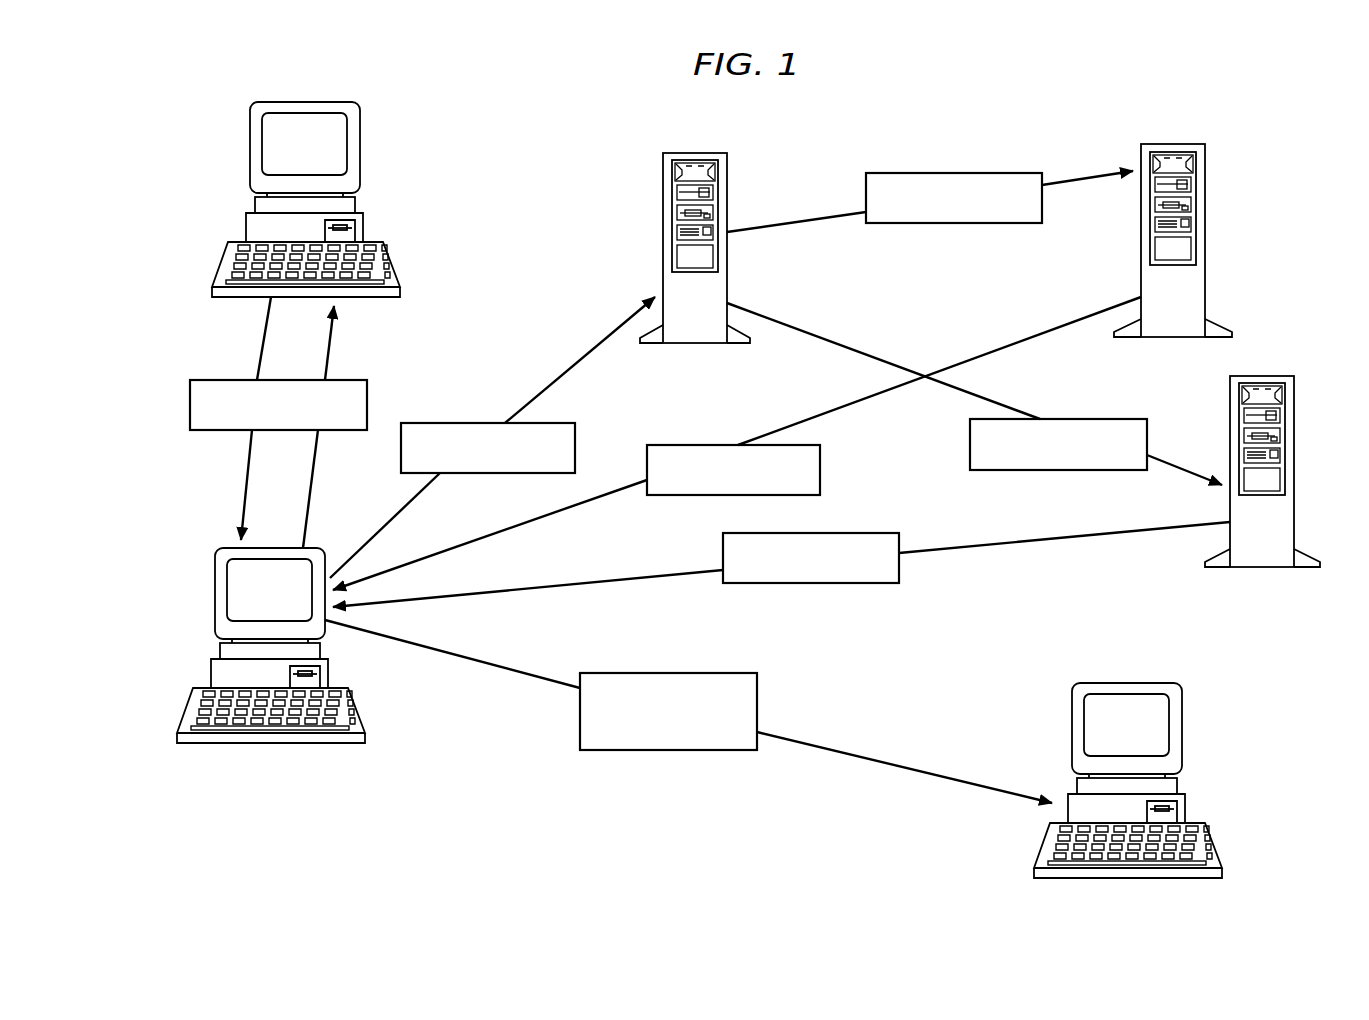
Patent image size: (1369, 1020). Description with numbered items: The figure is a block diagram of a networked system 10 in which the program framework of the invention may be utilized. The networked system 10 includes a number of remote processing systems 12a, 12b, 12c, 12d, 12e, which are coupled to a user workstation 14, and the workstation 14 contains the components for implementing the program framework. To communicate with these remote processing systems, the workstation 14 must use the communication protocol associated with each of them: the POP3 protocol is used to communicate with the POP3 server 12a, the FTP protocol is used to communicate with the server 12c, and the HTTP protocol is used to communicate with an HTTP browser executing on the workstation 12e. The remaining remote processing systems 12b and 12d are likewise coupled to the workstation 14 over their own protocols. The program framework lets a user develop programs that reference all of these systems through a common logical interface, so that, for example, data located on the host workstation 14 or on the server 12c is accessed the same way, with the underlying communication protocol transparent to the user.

The networked system 10 is at (148, 365).
The POP3 server 12a is at (360, 140).
The remote processing system 12b is at (727, 278).
The server 12c is at (1205, 278).
The remote processing system 12d is at (1294, 527).
The workstation 12e is at (1182, 748).
The user workstation 14 is at (215, 608).